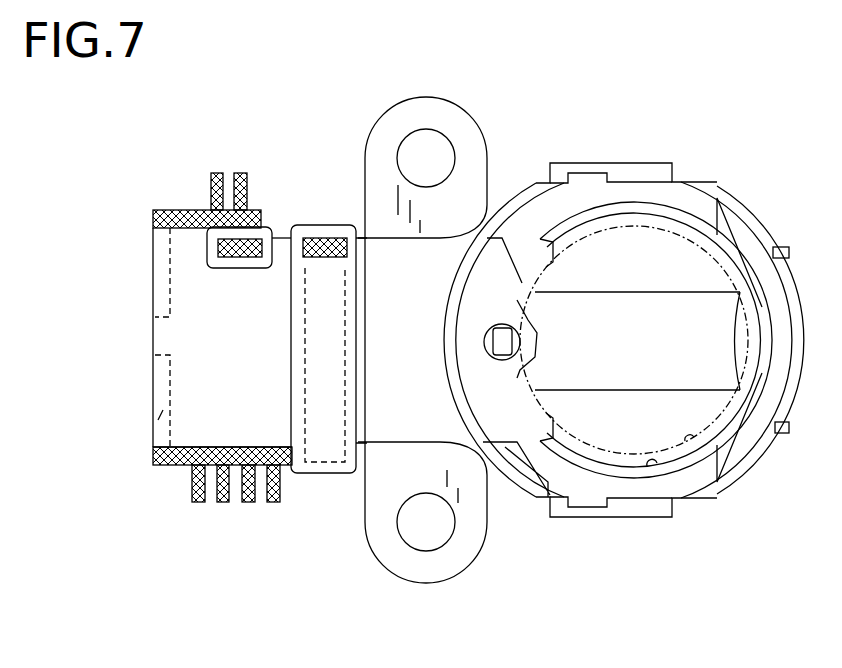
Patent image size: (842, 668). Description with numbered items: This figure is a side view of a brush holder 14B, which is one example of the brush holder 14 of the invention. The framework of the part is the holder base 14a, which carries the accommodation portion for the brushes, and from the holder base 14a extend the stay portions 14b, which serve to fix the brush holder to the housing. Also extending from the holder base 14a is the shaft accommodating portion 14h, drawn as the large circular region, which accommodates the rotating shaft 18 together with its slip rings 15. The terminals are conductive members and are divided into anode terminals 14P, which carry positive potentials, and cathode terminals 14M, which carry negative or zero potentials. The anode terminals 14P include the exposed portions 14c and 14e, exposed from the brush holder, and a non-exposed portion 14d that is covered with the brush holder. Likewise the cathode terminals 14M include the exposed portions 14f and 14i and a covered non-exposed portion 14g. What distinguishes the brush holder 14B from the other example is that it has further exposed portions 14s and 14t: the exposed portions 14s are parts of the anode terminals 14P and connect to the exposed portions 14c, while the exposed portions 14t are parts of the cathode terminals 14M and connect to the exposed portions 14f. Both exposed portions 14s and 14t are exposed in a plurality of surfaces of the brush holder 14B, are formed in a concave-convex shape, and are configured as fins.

The brush holder 14 is at (624, 295).
The brush holder 14B is at (682, 143).
The anode terminals 14P is at (95, 111).
The cathode terminals 14M is at (350, 575).
The holder base 14a is at (403, 283).
The stay portions 14b is at (440, 118).
The exposed portion 14c is at (152, 250).
The non-exposed portion 14d is at (273, 227).
The exposed portion 14e is at (250, 240).
The exposed portion 14f is at (153, 437).
The non-exposed portion 14g is at (310, 368).
The shaft accommodating portion 14h is at (495, 292).
The exposed portion 14i is at (330, 257).
The exposed portions 14s is at (240, 193).
The exposed portions 14t is at (247, 498).
The slip rings 15 is at (690, 440).
The rotating shaft 18 is at (651, 470).